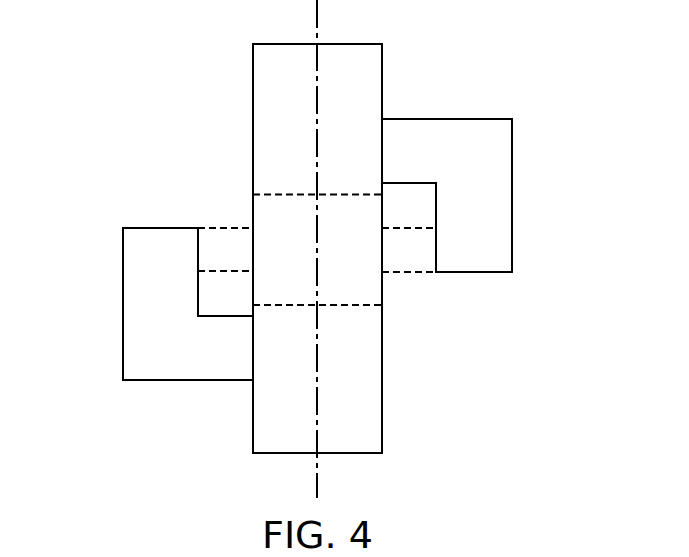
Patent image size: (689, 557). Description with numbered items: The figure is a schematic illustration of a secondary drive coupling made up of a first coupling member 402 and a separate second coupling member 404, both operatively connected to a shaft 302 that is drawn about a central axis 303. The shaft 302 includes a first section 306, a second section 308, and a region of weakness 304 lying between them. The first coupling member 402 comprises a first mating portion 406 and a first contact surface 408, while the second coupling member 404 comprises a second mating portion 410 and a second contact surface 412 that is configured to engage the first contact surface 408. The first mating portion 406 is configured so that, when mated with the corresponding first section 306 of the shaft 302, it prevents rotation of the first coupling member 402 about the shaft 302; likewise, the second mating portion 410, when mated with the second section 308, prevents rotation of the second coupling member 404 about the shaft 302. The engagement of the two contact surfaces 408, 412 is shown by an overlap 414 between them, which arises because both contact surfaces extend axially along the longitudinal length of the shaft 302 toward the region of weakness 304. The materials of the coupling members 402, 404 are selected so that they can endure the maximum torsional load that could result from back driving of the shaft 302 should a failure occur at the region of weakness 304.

The shaft 302 is at (253, 80).
The central axis 303 is at (317, 21).
The region of weakness 304 is at (308, 260).
The first section 306 is at (259, 151).
The second section 308 is at (375, 423).
The first coupling member 402 is at (512, 145).
The second coupling member 404 is at (123, 353).
The first mating portion 406 is at (422, 132).
The first contact surface 408 is at (503, 238).
The second mating portion 410 is at (212, 364).
The second contact surface 412 is at (125, 267).
The overlap 414 is at (408, 262).